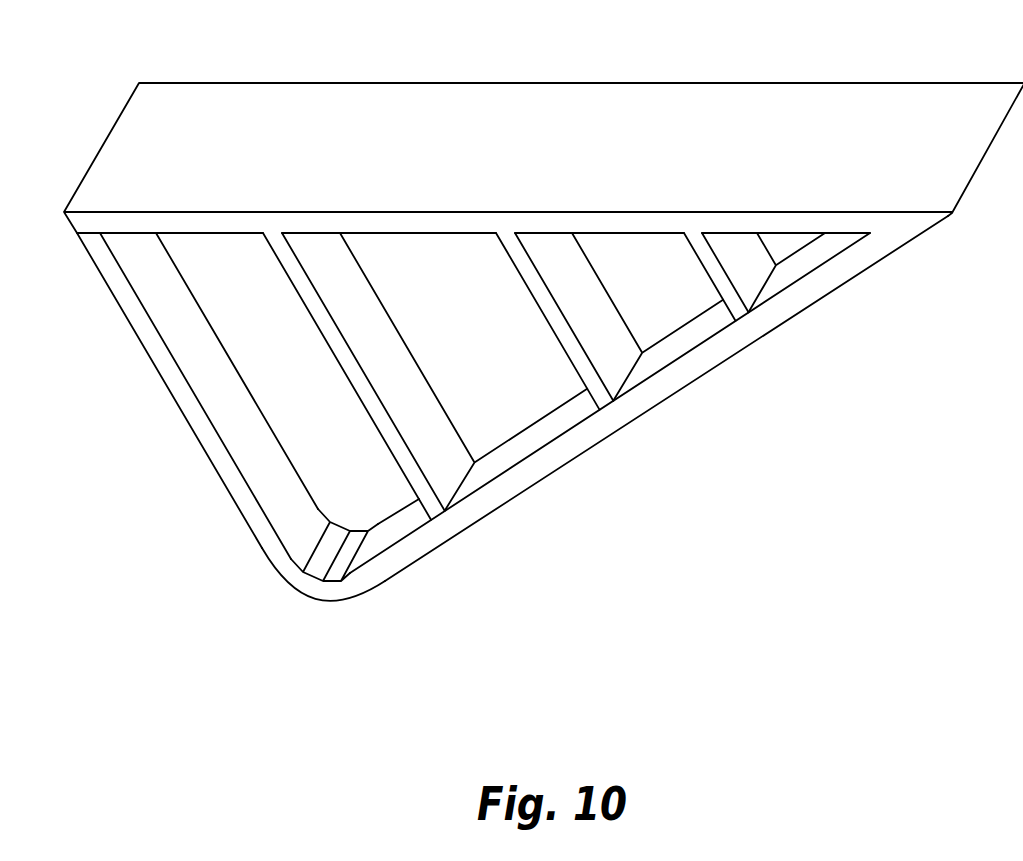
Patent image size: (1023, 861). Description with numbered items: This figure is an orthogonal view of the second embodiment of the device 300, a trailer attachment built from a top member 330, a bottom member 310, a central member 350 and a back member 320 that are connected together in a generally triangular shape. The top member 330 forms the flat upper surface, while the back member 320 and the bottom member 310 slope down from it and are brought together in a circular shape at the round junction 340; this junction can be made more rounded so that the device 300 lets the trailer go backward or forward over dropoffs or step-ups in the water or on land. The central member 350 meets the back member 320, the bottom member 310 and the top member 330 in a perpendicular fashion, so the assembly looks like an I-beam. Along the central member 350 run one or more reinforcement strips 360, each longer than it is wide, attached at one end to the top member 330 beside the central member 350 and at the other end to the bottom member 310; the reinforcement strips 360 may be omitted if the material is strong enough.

The device 300 is at (543, 348).
The bottom member 310 is at (863, 298).
The back member 320 is at (208, 517).
The top member 330 is at (553, 98).
The round junction 340 is at (290, 615).
The central member 350 is at (497, 432).
The reinforcement strip 360 is at (740, 283).